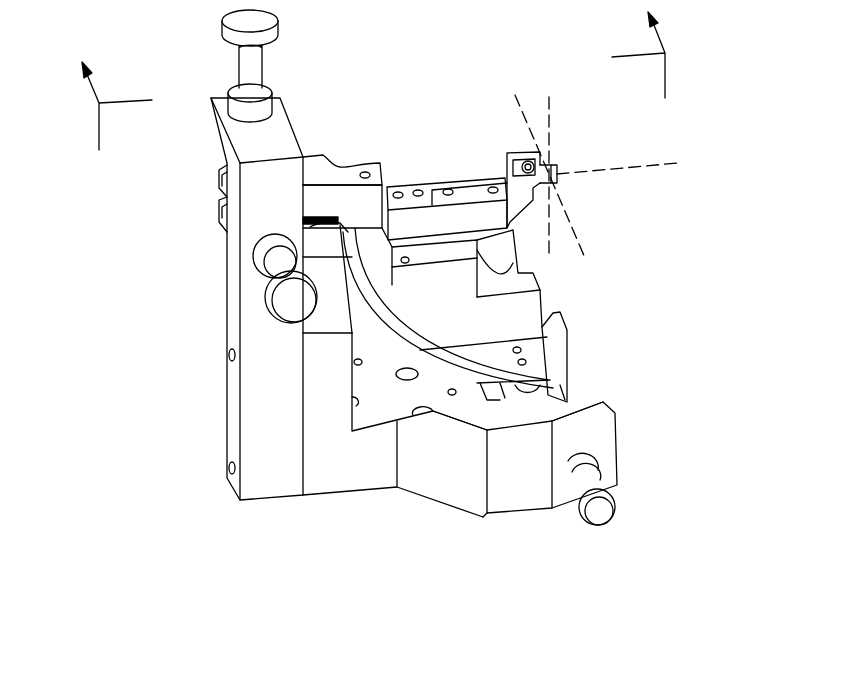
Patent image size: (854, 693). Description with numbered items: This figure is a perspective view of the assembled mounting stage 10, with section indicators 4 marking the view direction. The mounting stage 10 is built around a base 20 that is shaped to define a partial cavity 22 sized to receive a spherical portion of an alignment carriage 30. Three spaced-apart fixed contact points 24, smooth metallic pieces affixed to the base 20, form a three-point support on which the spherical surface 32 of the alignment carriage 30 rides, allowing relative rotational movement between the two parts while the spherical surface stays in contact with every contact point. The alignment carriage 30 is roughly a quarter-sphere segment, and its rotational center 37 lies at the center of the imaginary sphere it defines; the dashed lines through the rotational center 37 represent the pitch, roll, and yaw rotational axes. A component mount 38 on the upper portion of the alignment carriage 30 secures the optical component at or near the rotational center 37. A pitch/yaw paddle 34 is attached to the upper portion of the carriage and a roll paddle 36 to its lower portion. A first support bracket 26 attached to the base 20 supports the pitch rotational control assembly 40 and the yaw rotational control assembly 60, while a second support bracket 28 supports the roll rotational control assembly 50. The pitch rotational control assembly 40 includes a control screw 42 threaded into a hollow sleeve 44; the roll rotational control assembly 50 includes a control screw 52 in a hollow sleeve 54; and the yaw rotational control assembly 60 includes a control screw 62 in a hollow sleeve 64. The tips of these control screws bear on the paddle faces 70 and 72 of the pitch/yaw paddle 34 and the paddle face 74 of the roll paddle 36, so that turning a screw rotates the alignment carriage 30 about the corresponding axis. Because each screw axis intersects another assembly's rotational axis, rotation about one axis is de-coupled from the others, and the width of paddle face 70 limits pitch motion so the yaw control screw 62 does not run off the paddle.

The mounting stage 10 is at (151, 78).
The section view direction indicator 4 is at (367, 75).
The base 20 is at (326, 465).
The partial cavity 22 is at (389, 405).
The fixed contact points 24 is at (565, 410).
The first support bracket 26 is at (258, 182).
The second support bracket 28 is at (607, 437).
The alignment carriage 30 is at (500, 322).
The spherical surface 32 is at (363, 282).
The pitch/yaw paddle 34 is at (327, 197).
The roll paddle 36 is at (560, 350).
The rotational center 37 is at (558, 172).
The component mount 38 is at (466, 188).
The pitch rotational control assembly 40 is at (221, 60).
The control screw 42 is at (250, 63).
The hollow sleeve 44 is at (258, 107).
The roll rotational control assembly 50 is at (657, 495).
The control screw 52 is at (587, 523).
The hollow sleeve 54 is at (572, 468).
The yaw rotational control assembly 60 is at (235, 284).
The control screw 62 is at (281, 306).
The hollow sleeve 64 is at (262, 242).
The paddle face 70 is at (371, 221).
The paddle face 72 is at (316, 165).
The paddle face 74 is at (558, 373).